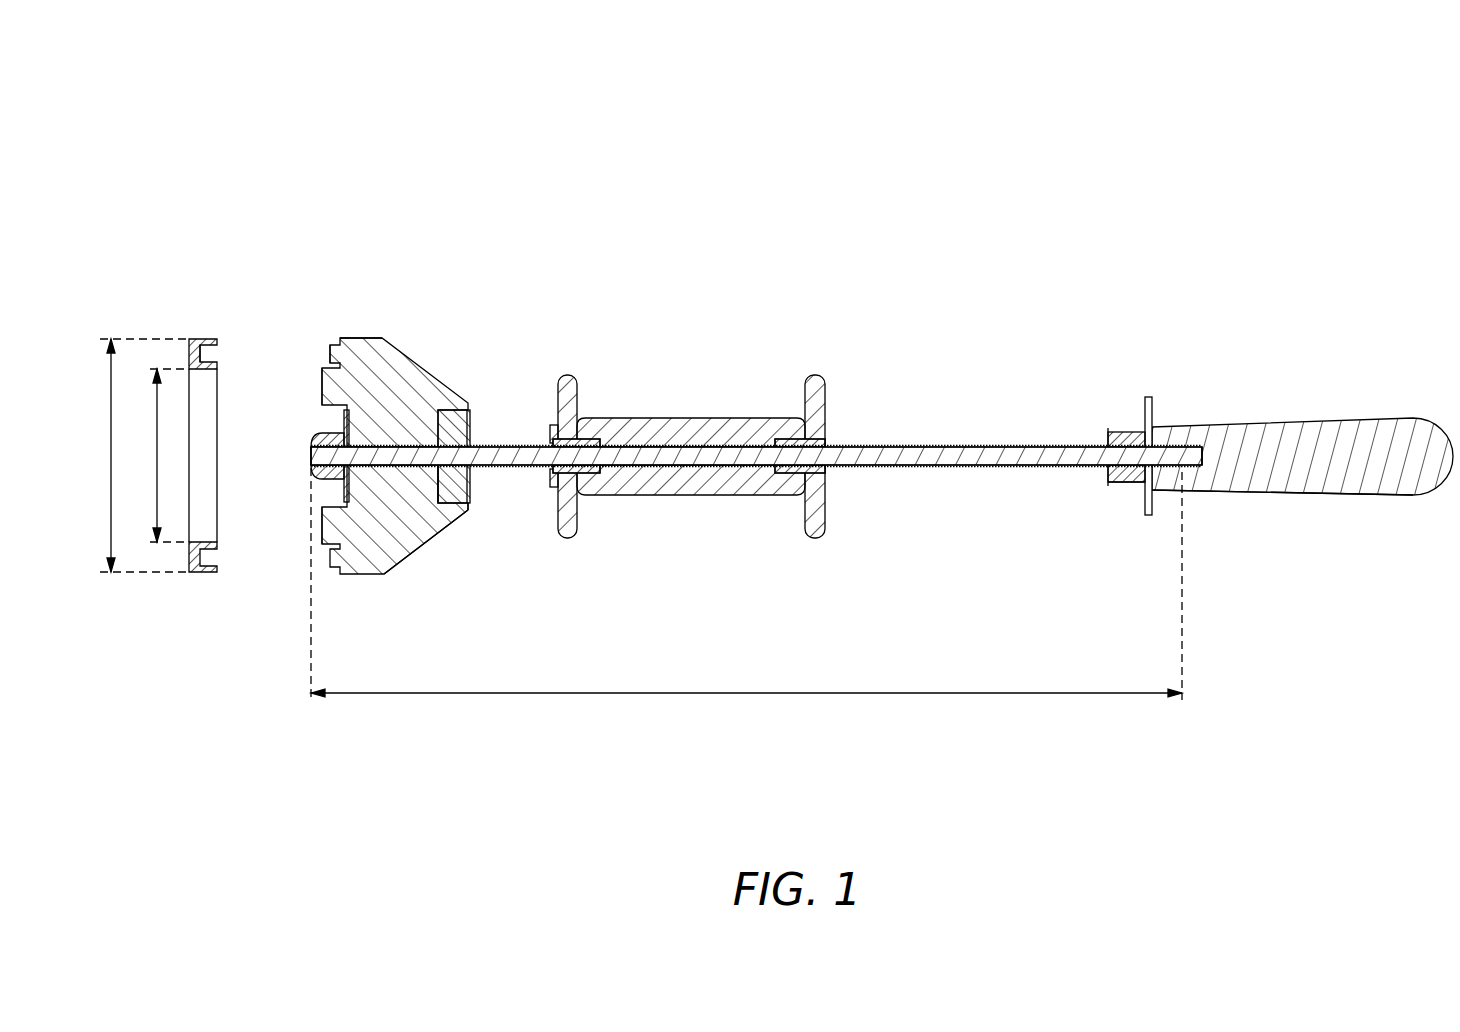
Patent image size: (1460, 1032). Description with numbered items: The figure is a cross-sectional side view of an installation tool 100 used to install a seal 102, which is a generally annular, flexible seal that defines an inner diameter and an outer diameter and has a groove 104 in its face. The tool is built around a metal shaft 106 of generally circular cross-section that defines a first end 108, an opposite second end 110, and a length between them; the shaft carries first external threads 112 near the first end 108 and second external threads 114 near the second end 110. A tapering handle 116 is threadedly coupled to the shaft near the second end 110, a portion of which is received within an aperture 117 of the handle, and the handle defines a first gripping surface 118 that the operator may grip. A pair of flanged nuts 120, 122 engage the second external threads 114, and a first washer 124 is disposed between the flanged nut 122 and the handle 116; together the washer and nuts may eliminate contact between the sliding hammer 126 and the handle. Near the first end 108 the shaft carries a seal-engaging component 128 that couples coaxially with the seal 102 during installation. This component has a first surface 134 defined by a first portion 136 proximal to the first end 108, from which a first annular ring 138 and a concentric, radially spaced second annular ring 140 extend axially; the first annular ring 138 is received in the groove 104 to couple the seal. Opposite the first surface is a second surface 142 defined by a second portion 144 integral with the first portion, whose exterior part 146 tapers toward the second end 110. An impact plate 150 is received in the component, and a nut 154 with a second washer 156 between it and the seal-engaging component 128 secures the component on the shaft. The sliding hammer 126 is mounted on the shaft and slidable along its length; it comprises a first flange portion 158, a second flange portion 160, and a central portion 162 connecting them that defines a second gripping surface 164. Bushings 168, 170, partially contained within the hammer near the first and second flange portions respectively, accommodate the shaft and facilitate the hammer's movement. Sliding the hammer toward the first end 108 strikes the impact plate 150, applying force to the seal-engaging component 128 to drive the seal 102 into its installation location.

The installation tool 100 is at (1268, 138).
The seal 102 is at (203, 339).
The groove 104 is at (216, 353).
The shaft 106 is at (980, 446).
The first end 108 is at (300, 457).
The second end 110 is at (1168, 482).
The first external threads 112 is at (397, 466).
The second external threads 114 is at (1180, 427).
The handle 116 is at (1383, 437).
The aperture 117 is at (1203, 453).
The first gripping surface 118 is at (1283, 495).
The flanged nut 120 is at (1125, 431).
The flanged nut 122 is at (1128, 484).
The first washer 124 is at (1148, 397).
The sliding hammer 126 is at (727, 418).
The seal-engaging component 128 is at (388, 330).
The first surface 134 is at (323, 513).
The first portion 136 is at (355, 330).
The first annular ring 138 is at (330, 348).
The second annular ring 140 is at (327, 388).
The second surface 142 is at (470, 405).
The second portion 144 is at (428, 560).
The exterior part 146 is at (466, 517).
The impact plate 150 is at (452, 493).
The nut 154 is at (317, 441).
The second washer 156 is at (330, 423).
The first flange portion 158 is at (568, 375).
The second flange portion 160 is at (817, 375).
The central portion 162 is at (665, 427).
The second gripping surface 164 is at (682, 495).
The bushing 168 is at (575, 473).
The bushing 170 is at (795, 473).